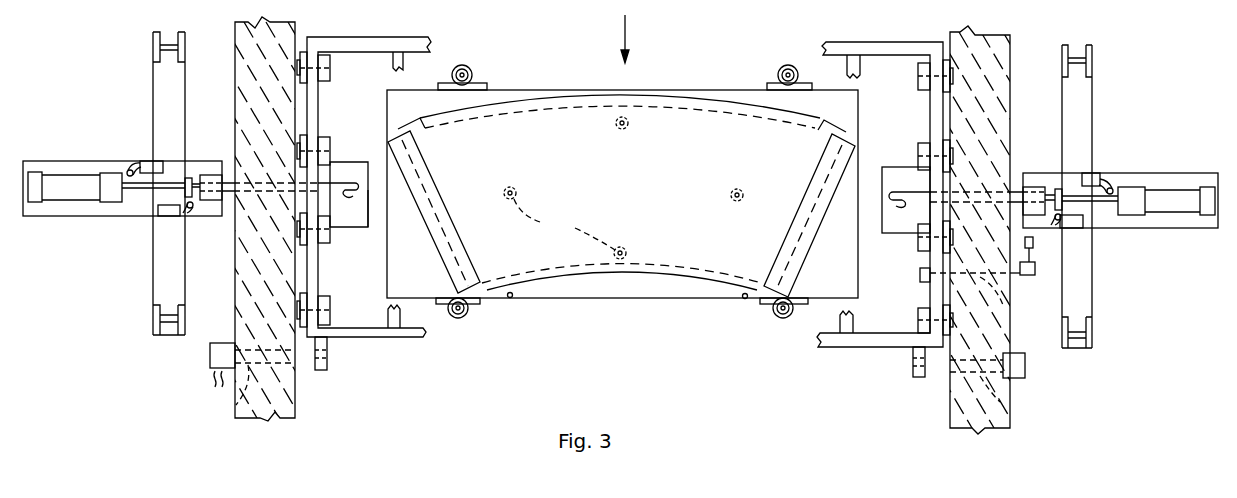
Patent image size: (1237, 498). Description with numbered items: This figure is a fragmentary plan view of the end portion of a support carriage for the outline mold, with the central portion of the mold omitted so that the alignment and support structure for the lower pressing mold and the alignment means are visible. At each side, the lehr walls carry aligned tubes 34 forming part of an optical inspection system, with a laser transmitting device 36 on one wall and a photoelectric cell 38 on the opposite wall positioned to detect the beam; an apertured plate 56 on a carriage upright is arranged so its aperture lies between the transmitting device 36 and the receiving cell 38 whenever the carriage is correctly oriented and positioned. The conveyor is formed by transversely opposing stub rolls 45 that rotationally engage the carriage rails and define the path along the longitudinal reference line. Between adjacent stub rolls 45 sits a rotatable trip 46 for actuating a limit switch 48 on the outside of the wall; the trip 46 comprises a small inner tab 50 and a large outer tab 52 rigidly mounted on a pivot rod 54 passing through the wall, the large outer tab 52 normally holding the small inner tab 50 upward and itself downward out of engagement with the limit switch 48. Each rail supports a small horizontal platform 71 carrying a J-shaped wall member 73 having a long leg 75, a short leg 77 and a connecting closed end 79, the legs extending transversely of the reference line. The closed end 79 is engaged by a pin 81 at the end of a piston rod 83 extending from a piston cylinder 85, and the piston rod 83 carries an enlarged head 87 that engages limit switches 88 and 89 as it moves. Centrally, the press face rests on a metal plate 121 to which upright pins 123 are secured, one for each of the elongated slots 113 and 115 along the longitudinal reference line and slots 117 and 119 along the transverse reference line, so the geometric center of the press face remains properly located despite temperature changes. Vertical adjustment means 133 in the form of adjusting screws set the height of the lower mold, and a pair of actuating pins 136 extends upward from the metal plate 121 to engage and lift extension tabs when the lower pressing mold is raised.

The tubes 34 is at (235, 405).
The laser transmitting device 36 is at (1025, 366).
The photoelectric cell 38 is at (221, 343).
The stub rolls 45 is at (330, 150).
The rotatable trip 46 is at (921, 283).
The limit switch 48 is at (1025, 242).
The small inner tab 50 is at (920, 274).
The large outer tab 52 is at (1020, 269).
The pivot rod 54 is at (1003, 309).
The apertured plate 56 is at (322, 372).
The horizontal platform 71 is at (368, 172).
The J-shaped wall member 73 is at (897, 212).
The long leg 75 is at (331, 151).
The short leg 77 is at (350, 198).
The closed end 79 is at (368, 213).
The pin 81 is at (266, 197).
The piston rod 83 is at (143, 190).
The piston cylinder 85 is at (83, 197).
The enlarged head 87 is at (190, 178).
The limit switch 88 is at (130, 170).
The limit switch 89 is at (195, 208).
The elongated slot 113 is at (630, 123).
The elongated slot 115 is at (626, 250).
The elongated slot 117 is at (511, 186).
The elongated slot 119 is at (740, 190).
The metal plate 121 is at (639, 300).
The upright pins 123 is at (564, 224).
The vertical adjustment means 133 is at (470, 315).
The actuating pins 136 is at (510, 298).